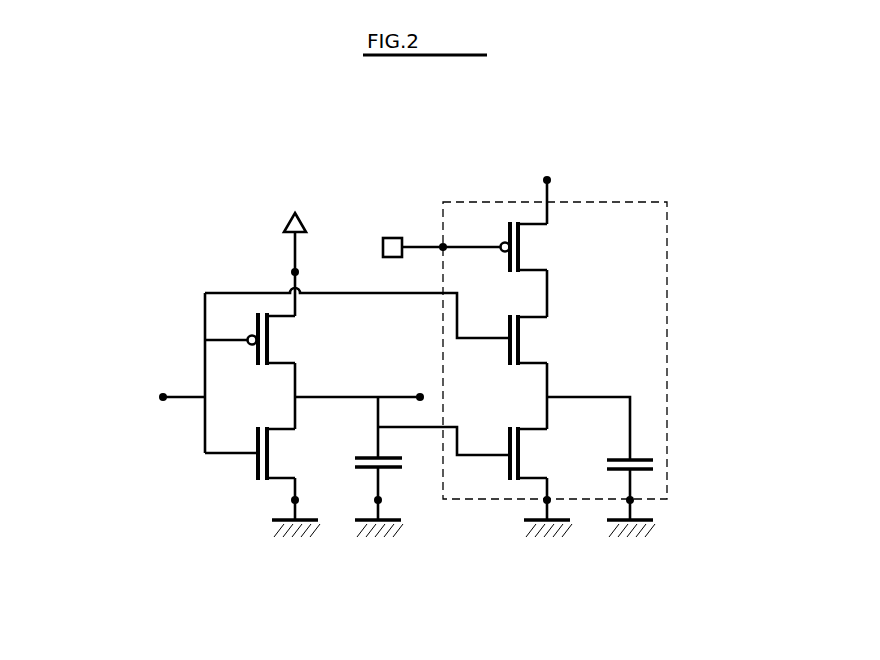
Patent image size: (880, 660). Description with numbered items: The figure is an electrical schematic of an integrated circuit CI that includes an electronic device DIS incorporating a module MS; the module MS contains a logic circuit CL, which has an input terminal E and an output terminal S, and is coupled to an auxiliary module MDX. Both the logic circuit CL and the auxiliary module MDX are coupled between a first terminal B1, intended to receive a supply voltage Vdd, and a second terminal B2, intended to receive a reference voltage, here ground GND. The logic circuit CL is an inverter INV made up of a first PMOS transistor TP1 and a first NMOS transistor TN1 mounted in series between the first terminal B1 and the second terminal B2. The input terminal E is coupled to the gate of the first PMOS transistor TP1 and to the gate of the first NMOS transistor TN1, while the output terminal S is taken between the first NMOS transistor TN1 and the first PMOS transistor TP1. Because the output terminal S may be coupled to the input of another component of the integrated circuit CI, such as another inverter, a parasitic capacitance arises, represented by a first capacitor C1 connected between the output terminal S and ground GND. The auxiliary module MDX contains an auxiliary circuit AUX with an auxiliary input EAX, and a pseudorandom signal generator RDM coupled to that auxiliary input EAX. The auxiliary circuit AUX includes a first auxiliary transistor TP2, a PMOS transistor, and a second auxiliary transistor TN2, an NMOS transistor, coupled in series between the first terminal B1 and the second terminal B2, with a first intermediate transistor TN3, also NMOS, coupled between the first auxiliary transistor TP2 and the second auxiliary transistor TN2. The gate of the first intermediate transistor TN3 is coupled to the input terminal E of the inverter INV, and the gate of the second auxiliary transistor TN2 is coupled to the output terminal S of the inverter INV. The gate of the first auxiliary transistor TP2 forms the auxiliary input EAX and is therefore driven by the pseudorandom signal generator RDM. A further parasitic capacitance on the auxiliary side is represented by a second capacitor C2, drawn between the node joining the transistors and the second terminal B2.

The integrated circuit CI is at (125, 213).
The module MS is at (152, 178).
The device DIS is at (180, 148).
The logic circuit CL is at (270, 245).
The inverter INV is at (243, 278).
The first PMOS transistor TP1 is at (289, 340).
The first NMOS transistor TN1 is at (247, 509).
The supply voltage Vdd is at (309, 222).
The first terminal B1 is at (300, 272).
The second terminal B2 is at (378, 500).
The input terminal E is at (163, 392).
The output terminal S is at (420, 392).
The first capacitor C1 is at (408, 478).
The ground GND is at (283, 546).
The auxiliary module MDX is at (395, 147).
The pseudorandom signal generator RDM is at (392, 236).
The auxiliary input EAX is at (443, 243).
The auxiliary circuit AUX is at (668, 349).
The first auxiliary transistor TP2 is at (545, 253).
The first intermediate transistor TN3 is at (544, 338).
The second auxiliary transistor TN2 is at (503, 426).
The second capacitor C2 is at (662, 460).